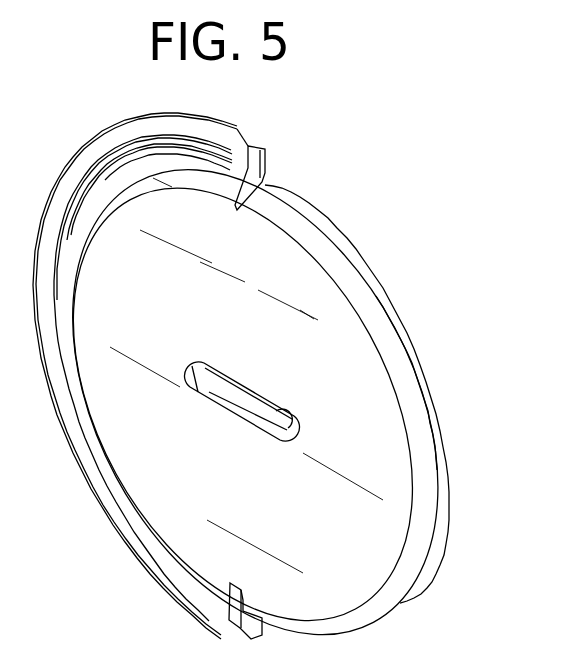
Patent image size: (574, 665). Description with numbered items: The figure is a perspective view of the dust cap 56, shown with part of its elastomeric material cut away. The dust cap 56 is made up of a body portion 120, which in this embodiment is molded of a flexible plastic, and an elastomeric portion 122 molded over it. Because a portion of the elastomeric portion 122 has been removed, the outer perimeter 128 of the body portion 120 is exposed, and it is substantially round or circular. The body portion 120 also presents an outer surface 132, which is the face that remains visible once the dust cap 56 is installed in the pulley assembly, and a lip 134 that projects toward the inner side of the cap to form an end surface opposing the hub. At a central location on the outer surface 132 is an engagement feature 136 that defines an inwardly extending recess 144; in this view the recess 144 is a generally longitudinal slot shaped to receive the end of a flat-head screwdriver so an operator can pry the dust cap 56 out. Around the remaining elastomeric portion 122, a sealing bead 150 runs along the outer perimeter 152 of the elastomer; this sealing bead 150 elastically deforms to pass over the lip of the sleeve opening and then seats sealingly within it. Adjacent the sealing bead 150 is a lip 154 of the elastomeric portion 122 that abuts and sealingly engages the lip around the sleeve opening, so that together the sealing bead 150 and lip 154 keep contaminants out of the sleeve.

The dust cap 56 is at (413, 243).
The body portion 120 is at (178, 296).
The elastomeric portion 122 is at (190, 586).
The outer perimeter 128 is at (305, 233).
The outer surface 132 is at (366, 370).
The lip 134 is at (440, 410).
The engagement feature 136 is at (280, 400).
The recess 144 is at (243, 393).
The sealing bead 150 is at (188, 119).
The outer perimeter 152 is at (265, 148).
The lip 154 is at (237, 158).